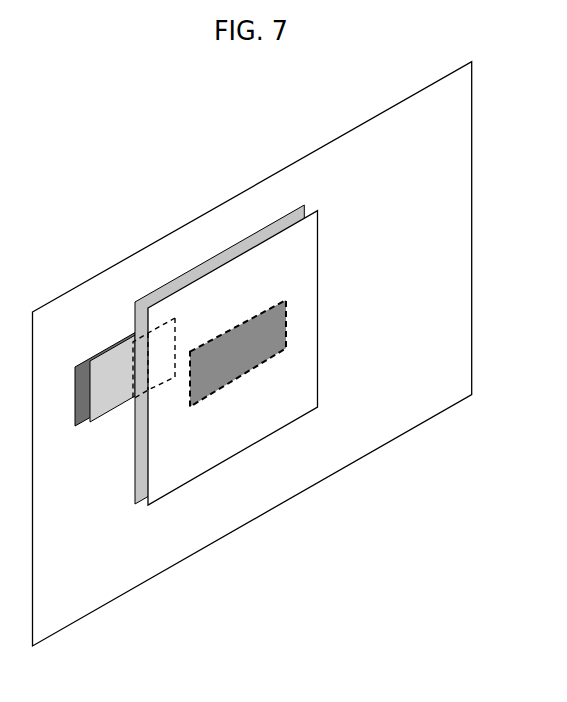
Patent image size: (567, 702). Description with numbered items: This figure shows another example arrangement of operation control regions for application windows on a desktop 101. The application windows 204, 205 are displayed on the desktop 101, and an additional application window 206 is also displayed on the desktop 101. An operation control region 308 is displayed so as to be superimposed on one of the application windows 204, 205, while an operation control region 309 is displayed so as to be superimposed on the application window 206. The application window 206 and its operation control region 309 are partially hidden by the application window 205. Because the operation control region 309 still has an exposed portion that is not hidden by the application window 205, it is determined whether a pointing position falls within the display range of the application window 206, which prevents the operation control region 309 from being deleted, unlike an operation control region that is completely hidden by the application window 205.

The desktop 101 is at (461, 148).
The application window 204 is at (238, 352).
The application window 205 is at (169, 290).
The application window 206 is at (90, 366).
The operation control region 308 is at (243, 433).
The operation control region 309 is at (110, 392).